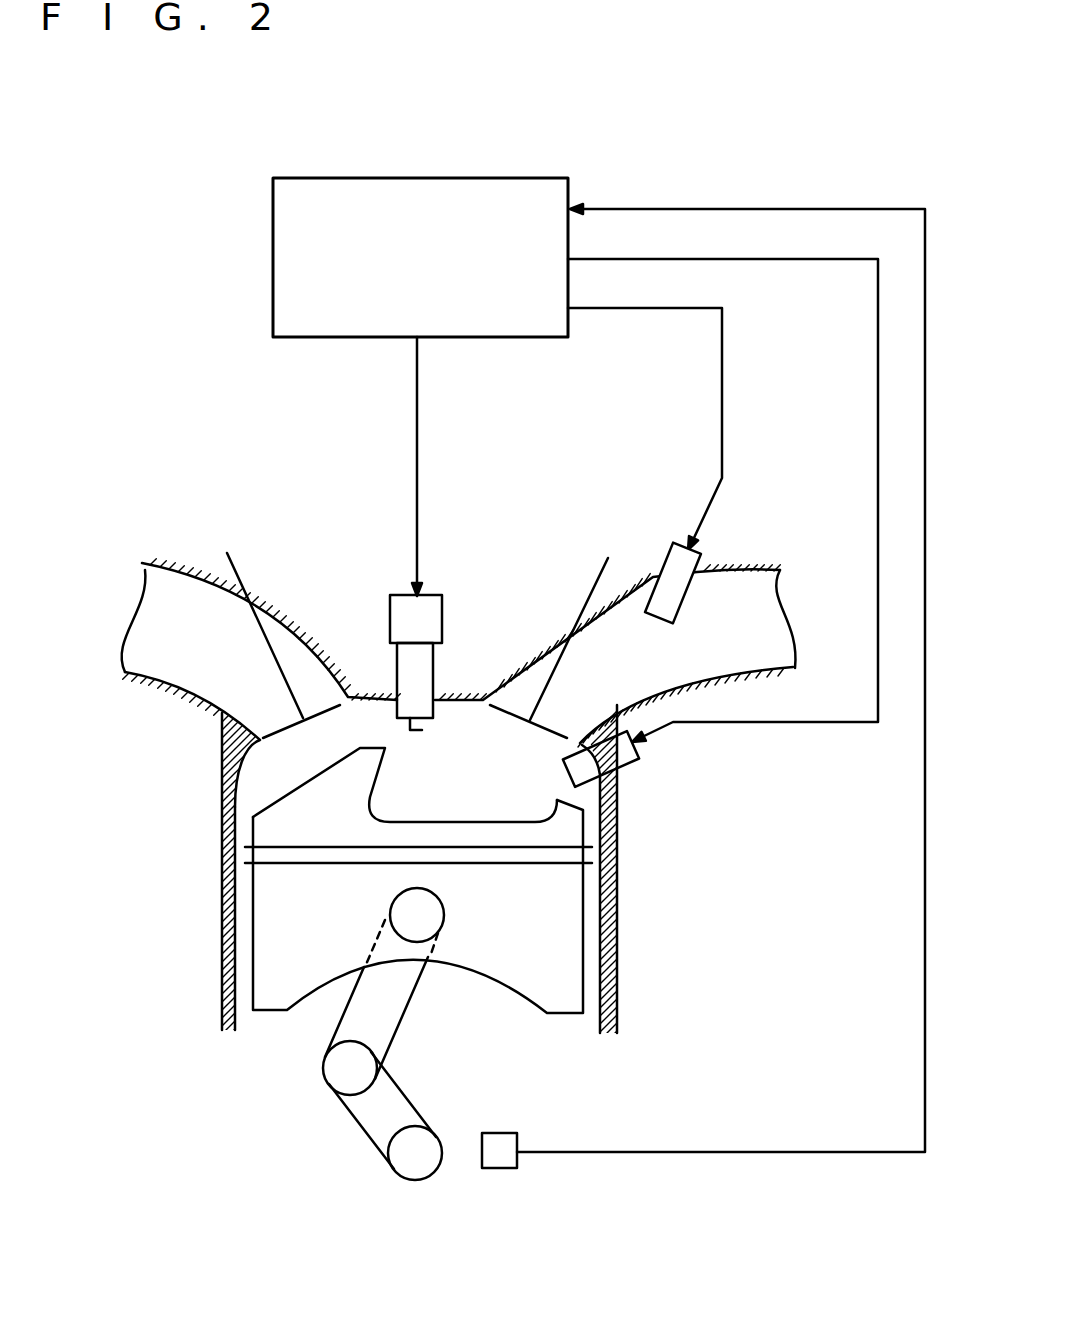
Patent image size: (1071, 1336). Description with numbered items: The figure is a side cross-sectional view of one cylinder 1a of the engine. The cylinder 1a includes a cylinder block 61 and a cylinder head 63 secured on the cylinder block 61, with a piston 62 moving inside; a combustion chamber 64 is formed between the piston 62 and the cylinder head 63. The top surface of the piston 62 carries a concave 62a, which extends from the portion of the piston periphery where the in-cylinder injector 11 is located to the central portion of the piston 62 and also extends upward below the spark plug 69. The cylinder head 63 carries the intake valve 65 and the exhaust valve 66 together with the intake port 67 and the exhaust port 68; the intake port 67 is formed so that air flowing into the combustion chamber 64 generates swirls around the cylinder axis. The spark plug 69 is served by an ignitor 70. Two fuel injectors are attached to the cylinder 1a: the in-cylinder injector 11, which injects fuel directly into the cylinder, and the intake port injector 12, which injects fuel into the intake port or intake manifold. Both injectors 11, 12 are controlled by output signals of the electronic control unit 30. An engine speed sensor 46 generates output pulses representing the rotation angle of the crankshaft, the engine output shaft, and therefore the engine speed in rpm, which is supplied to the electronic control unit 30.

The electronic control unit 30 is at (432, 178).
The ignitor 70 is at (445, 612).
The spark plug 69 is at (397, 667).
The cylinder head 63 is at (406, 621).
The exhaust valve 66 is at (233, 560).
The intake valve 65 is at (600, 568).
The intake port injector 12 is at (673, 552).
The in-cylinder injector 11 is at (633, 773).
The intake port 67 is at (715, 668).
The exhaust port 68 is at (152, 672).
The combustion chamber 64 is at (493, 780).
The piston 62 is at (362, 880).
The concave 62a is at (430, 822).
The cylinder block 61 is at (507, 895).
The cylinder 1a is at (595, 1024).
The engine speed sensor 46 is at (500, 1170).